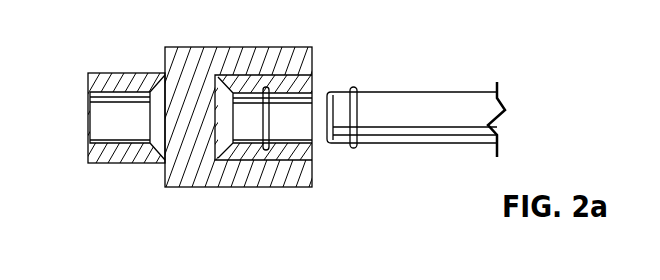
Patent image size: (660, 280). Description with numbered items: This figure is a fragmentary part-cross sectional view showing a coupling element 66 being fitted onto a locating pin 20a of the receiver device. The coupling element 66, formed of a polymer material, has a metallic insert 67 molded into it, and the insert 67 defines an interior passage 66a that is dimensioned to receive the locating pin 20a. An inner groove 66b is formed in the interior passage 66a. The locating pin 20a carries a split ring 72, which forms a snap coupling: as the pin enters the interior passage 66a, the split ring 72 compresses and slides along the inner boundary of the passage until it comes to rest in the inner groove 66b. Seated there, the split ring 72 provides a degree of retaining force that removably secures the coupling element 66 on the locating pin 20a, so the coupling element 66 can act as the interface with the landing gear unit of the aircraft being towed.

The coupling element 66 is at (193, 47).
The metallic insert 67 is at (313, 83).
The interior passage 66a is at (297, 133).
The inner groove 66b is at (267, 122).
The split ring 72 is at (354, 88).
The locating pin 20a is at (438, 107).